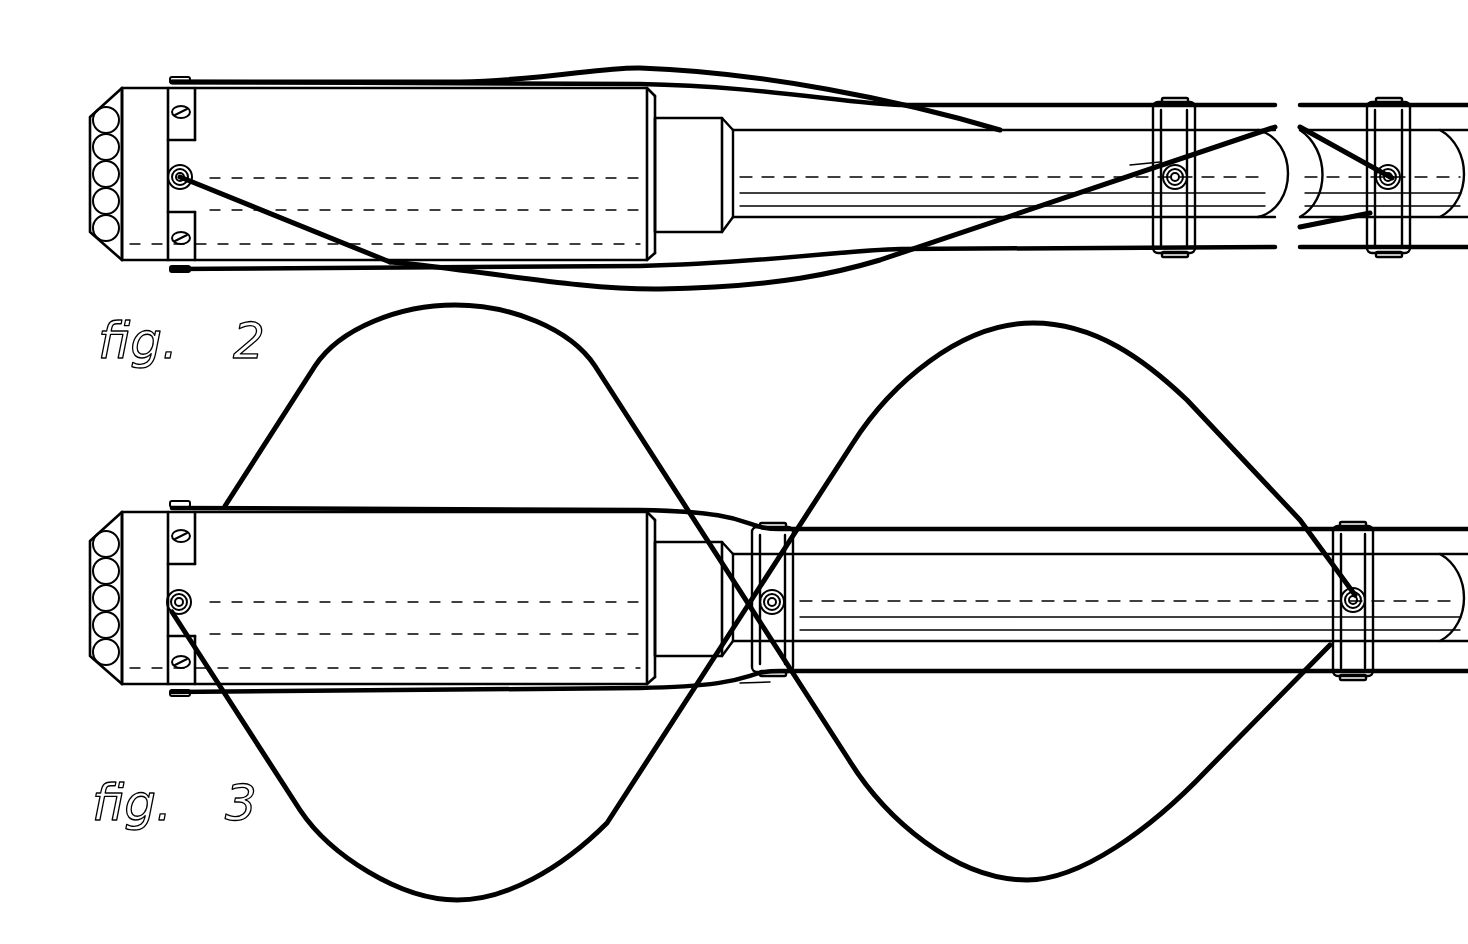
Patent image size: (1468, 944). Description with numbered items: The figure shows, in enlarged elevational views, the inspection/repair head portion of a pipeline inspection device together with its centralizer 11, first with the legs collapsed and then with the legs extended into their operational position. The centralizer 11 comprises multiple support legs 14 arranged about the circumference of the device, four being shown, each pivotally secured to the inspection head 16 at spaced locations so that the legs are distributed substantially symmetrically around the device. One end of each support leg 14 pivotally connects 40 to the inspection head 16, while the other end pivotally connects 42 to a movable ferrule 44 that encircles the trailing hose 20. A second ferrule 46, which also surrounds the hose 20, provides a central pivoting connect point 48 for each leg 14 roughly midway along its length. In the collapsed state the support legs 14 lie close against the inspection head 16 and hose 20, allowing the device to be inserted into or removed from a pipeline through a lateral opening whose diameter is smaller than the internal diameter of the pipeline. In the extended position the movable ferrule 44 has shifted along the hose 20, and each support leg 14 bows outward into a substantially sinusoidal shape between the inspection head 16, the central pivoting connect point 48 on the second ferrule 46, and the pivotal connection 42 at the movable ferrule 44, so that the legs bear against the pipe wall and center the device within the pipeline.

In FIG. 2, the centralizer 11 is at (1268, 92).
In FIG. 3, the centralizer 11 is at (1338, 500).
In FIG. 2, the support legs 14 is at (872, 72).
In FIG. 3, the support legs 14 is at (1207, 432).
In FIG. 2, the inspection head 16 is at (496, 189).
In FIG. 3, the inspection head 16 is at (406, 598).
In FIG. 2, the hose 20 is at (882, 189).
In FIG. 3, the hose 20 is at (1095, 599).
In FIG. 2, the pivotal connection to inspection head 40 is at (195, 176).
In FIG. 3, the pivotal connection to inspection head 40 is at (195, 601).
In FIG. 2, the pivotal connection to movable ferrule 42 is at (1389, 102).
In FIG. 3, the pivotal connection to movable ferrule 42 is at (1358, 525).
In FIG. 2, the movable ferrule 44 is at (1400, 200).
In FIG. 3, the movable ferrule 44 is at (1336, 606).
In FIG. 2, the second ferrule 46 is at (1155, 152).
In FIG. 3, the second ferrule 46 is at (762, 684).
In FIG. 2, the central pivoting connect point 48 is at (1175, 100).
In FIG. 3, the central pivoting connect point 48 is at (770, 524).